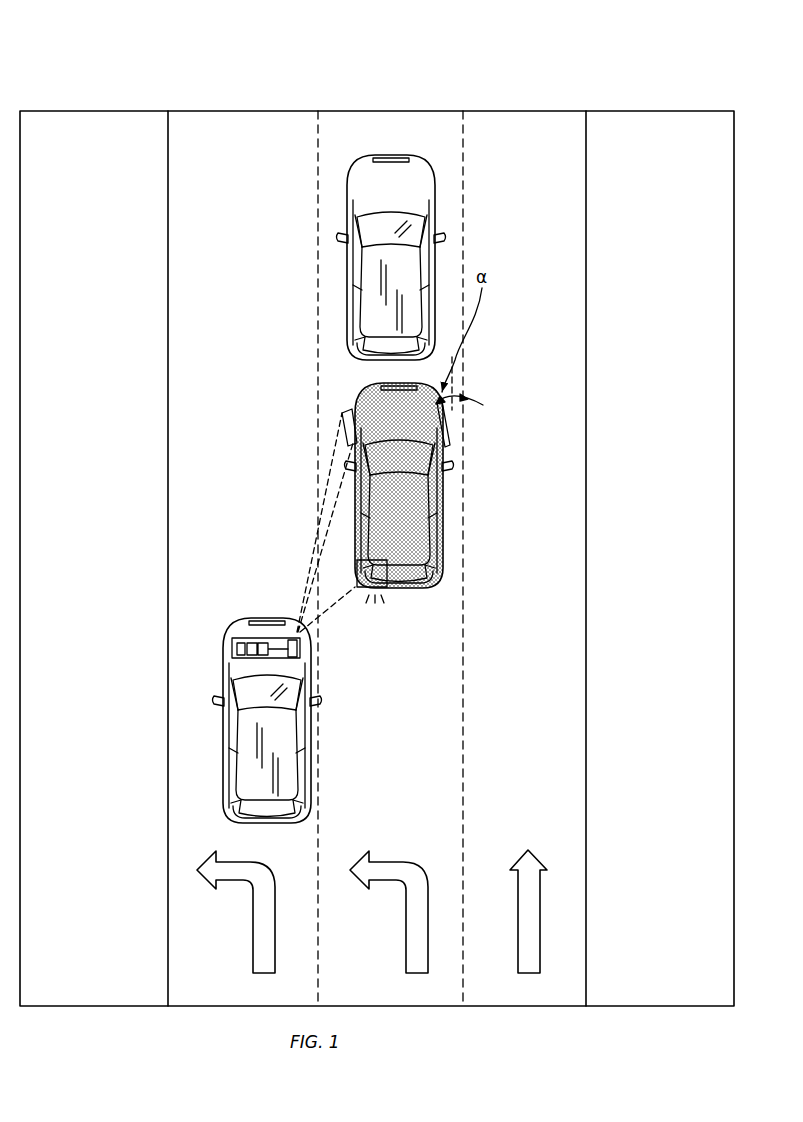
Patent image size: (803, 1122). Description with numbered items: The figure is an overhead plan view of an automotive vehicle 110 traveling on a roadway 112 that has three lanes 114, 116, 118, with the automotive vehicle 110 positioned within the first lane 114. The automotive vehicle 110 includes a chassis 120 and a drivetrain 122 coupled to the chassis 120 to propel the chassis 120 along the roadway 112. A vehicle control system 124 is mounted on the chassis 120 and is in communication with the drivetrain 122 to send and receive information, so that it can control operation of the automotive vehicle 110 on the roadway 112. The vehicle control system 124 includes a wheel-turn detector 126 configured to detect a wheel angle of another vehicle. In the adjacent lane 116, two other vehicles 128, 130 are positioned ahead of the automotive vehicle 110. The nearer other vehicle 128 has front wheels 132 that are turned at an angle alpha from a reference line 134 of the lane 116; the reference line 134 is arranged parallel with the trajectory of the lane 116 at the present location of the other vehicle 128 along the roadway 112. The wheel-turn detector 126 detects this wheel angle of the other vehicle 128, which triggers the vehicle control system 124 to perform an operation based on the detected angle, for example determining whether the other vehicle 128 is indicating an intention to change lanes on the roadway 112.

The automotive vehicle 110 is at (246, 608).
The roadway 112 is at (125, 78).
The lane 114 is at (277, 135).
The lane 116 is at (406, 104).
The lane 118 is at (548, 135).
The chassis 120 is at (314, 782).
The drivetrain 122 is at (316, 655).
The vehicle control system 124 is at (231, 646).
The wheel-turn detector 126 is at (294, 632).
The other vehicle 128 is at (446, 506).
The other vehicle 130 is at (426, 150).
The front wheels 132 is at (345, 412).
The reference line 134 is at (455, 391).